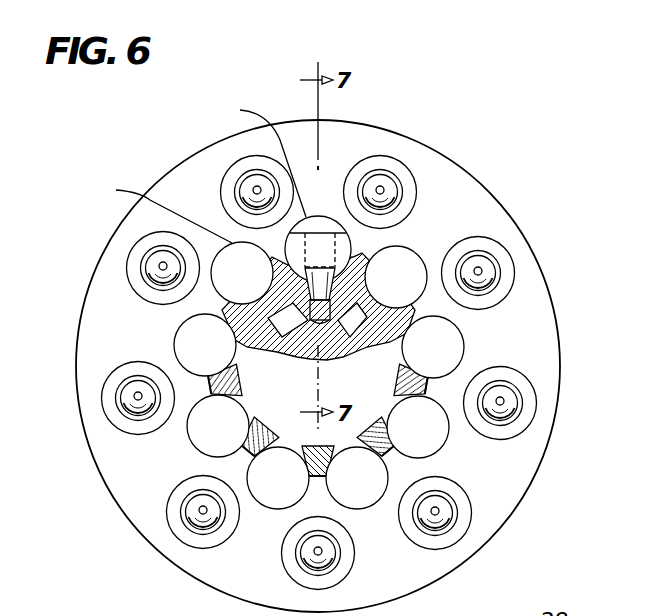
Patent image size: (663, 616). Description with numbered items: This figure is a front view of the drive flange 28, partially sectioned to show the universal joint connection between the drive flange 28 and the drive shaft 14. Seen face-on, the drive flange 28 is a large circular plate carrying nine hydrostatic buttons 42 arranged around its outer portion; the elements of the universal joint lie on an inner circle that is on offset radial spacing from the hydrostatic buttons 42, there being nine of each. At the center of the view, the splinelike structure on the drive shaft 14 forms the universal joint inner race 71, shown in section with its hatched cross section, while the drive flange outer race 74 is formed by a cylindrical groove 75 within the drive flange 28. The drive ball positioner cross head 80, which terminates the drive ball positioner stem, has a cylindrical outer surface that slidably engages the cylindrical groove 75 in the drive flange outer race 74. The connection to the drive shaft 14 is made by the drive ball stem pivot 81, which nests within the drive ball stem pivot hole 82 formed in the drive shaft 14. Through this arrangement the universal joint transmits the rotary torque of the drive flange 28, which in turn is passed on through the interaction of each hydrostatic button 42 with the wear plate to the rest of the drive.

The drive shaft 14 is at (340, 345).
The drive flange 28 is at (535, 442).
The hydrostatic button 42 is at (515, 268).
The universal joint inner race 71 is at (360, 254).
The drive flange outer race 74 is at (332, 205).
The cylindrical groove 75 is at (196, 173).
The drive ball positioner cross head 80 is at (274, 253).
The drive ball stem pivot 81 is at (349, 303).
The drive ball stem pivot hole 82 is at (316, 352).